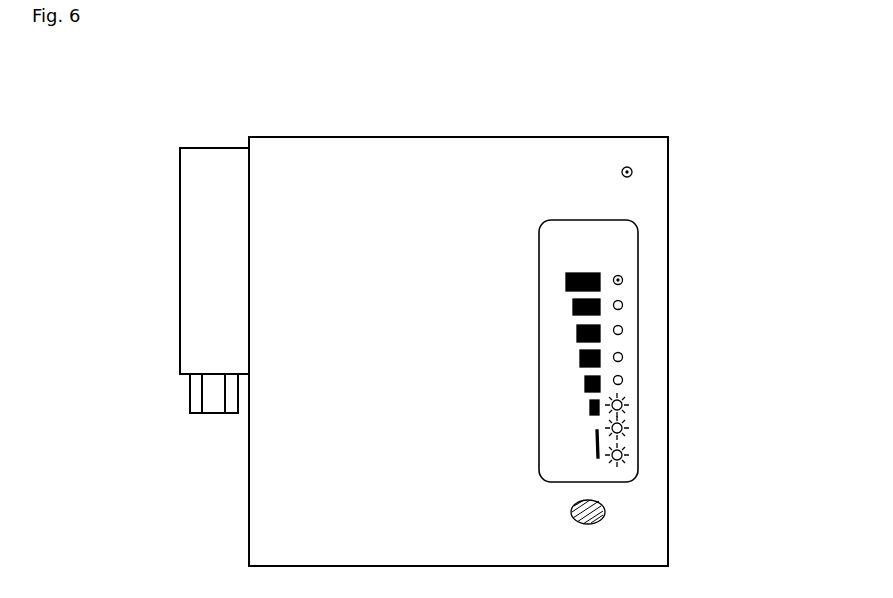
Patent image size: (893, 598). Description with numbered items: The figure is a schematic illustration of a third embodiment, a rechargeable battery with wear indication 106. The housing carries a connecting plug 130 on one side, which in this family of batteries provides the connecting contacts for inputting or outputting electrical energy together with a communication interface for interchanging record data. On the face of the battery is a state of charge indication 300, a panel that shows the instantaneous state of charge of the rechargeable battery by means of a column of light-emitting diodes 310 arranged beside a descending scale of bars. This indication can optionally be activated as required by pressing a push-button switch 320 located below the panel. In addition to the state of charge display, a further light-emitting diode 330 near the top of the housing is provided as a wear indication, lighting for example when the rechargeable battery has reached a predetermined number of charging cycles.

The rechargeable battery with wear indication 106 is at (513, 73).
The connecting plug 130 is at (200, 440).
The state of charge indication 300 is at (636, 378).
The light-emitting diodes 310 is at (623, 278).
The push-button switch 320 is at (602, 505).
The further light-emitting diode 330 is at (633, 170).